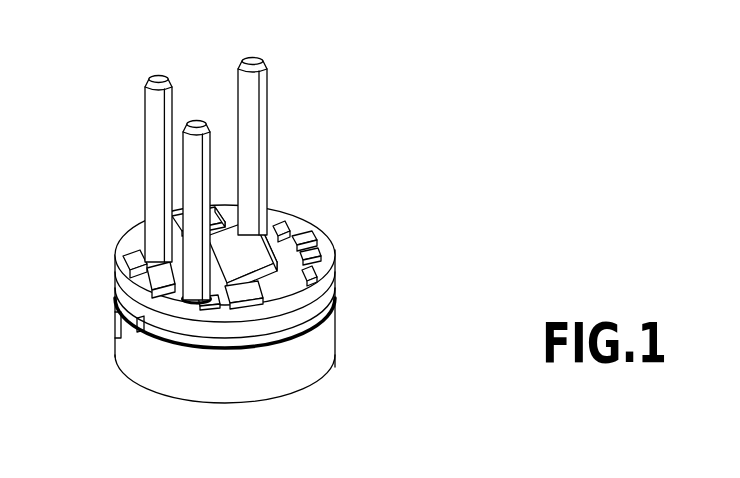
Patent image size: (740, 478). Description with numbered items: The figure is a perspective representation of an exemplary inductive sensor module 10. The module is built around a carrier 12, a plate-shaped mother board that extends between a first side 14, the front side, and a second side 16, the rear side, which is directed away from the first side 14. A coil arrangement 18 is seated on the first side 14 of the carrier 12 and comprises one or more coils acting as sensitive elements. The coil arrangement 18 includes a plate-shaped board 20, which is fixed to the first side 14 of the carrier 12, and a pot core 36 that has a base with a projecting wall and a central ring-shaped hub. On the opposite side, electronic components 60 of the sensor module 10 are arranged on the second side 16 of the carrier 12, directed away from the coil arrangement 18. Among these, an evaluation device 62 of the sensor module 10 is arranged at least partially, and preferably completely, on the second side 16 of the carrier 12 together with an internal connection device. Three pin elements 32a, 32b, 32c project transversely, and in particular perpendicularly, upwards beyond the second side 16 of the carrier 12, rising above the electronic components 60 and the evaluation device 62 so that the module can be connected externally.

The inductive sensor module 10 is at (413, 153).
The carrier 12 is at (335, 283).
The first side 14 is at (267, 337).
The second side 16 is at (300, 218).
The coil arrangement 18 is at (183, 395).
The board 20 is at (117, 290).
The pin element 32a is at (160, 77).
The pin element 32b is at (254, 60).
The pin element 32c is at (187, 152).
The pot core 36 is at (310, 352).
The electronic components 60 is at (337, 263).
The evaluation device 62 is at (302, 194).